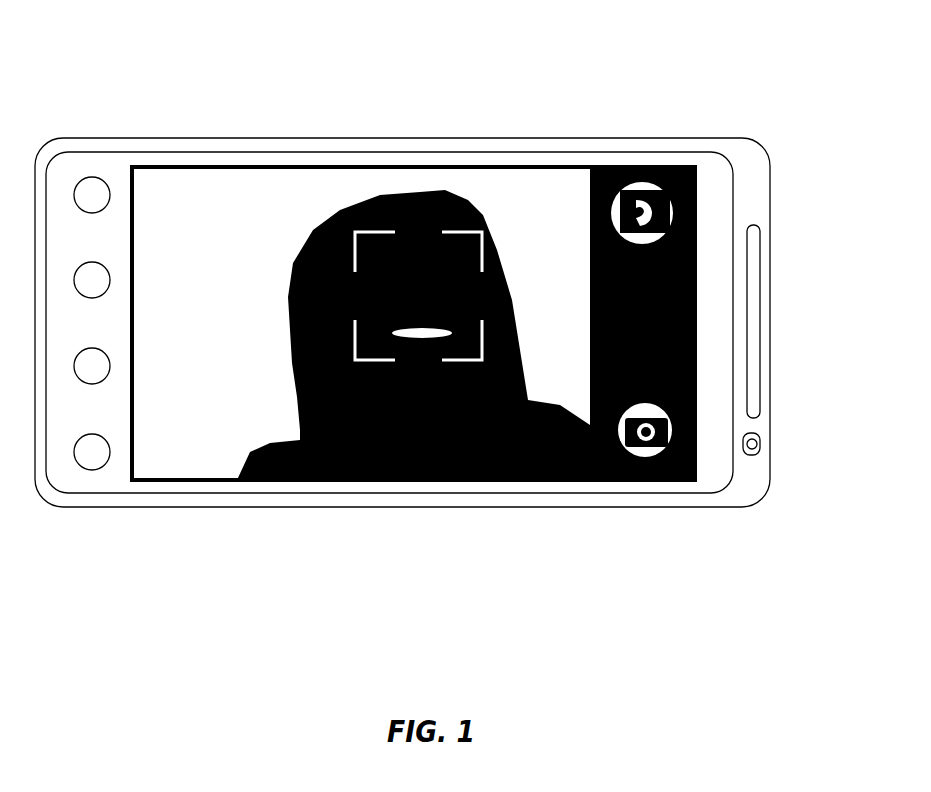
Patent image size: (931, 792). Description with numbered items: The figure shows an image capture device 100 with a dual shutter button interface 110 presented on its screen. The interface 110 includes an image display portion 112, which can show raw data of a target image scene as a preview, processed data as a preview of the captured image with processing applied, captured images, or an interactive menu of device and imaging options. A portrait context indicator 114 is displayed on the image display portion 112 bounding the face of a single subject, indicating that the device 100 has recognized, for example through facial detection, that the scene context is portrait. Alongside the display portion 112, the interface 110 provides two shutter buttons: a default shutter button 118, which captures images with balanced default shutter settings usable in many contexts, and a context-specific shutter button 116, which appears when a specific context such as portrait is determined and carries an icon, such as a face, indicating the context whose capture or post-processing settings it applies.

The image capture device 100 is at (134, 70).
The dual shutter button interface 110 is at (672, 167).
The image display portion 112 is at (250, 202).
The portrait context indicator 114 is at (447, 232).
The context-specific shutter button 116 is at (672, 212).
The default shutter button 118 is at (672, 430).